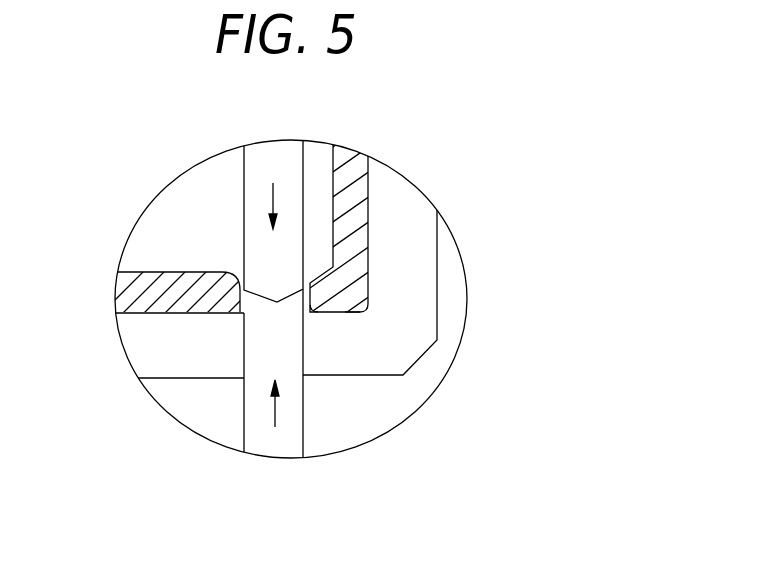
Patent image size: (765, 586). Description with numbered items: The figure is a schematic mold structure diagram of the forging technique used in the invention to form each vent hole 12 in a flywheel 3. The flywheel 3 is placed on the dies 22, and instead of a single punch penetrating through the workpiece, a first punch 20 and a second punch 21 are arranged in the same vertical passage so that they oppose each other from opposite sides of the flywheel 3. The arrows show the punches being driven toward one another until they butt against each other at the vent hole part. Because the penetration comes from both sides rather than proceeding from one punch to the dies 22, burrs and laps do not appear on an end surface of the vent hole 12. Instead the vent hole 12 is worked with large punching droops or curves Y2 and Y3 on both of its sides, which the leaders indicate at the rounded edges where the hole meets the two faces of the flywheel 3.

The first punch 20 is at (264, 168).
The second punch 21 is at (267, 438).
The dies 22 is at (398, 207).
The flywheel 3 is at (172, 303).
The vent hole 12 is at (243, 316).
The punching droop Y2 is at (310, 312).
The punching droop Y3 is at (352, 303).